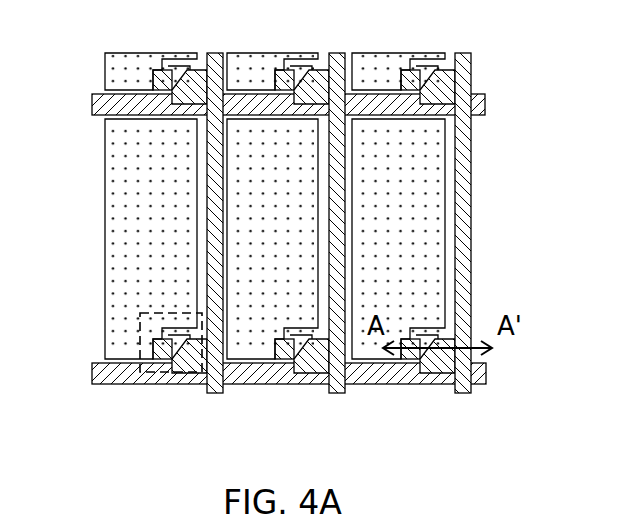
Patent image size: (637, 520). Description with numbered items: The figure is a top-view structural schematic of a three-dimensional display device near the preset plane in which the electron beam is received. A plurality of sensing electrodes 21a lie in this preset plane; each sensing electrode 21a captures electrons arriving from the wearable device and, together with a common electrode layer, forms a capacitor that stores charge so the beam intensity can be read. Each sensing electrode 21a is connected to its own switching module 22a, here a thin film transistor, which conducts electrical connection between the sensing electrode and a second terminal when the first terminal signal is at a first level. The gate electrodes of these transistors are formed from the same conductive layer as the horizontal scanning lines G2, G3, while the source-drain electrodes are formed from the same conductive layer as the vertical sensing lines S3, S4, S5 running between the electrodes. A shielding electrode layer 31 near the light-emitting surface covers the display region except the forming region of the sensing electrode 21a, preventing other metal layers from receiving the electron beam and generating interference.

The sensing electrode 21a is at (125, 180).
The shielding electrode layer 31 is at (92, 272).
The switching module 22a is at (187, 373).
The sensing line S3 is at (216, 206).
The sensing line S4 is at (338, 206).
The sensing line S5 is at (464, 206).
The scanning line G2 is at (312, 105).
The scanning line G3 is at (312, 373).